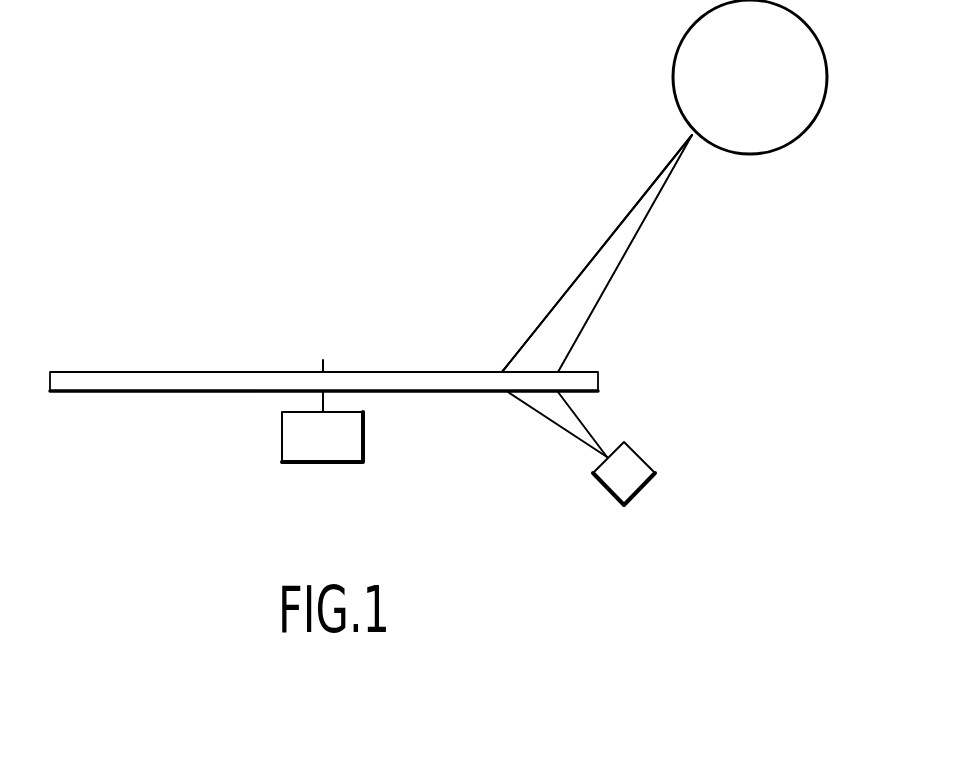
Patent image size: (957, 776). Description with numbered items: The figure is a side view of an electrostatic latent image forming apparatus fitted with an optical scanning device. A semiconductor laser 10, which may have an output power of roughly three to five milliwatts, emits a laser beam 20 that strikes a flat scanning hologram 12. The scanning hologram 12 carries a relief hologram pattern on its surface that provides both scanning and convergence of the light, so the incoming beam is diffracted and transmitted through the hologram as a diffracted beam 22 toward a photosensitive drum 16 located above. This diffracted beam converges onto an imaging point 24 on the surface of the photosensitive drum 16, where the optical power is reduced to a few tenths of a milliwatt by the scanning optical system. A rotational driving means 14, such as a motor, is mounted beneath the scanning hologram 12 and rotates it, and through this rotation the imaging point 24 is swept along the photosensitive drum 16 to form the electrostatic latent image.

The semiconductor laser 10 is at (632, 468).
The scanning hologram 12 is at (598, 373).
The rotational driving means 14 is at (296, 437).
The photosensitive drum 16 is at (697, 60).
The laser beam 20 is at (542, 412).
The incident beam 22 is at (573, 302).
The imaging point 24 is at (692, 133).